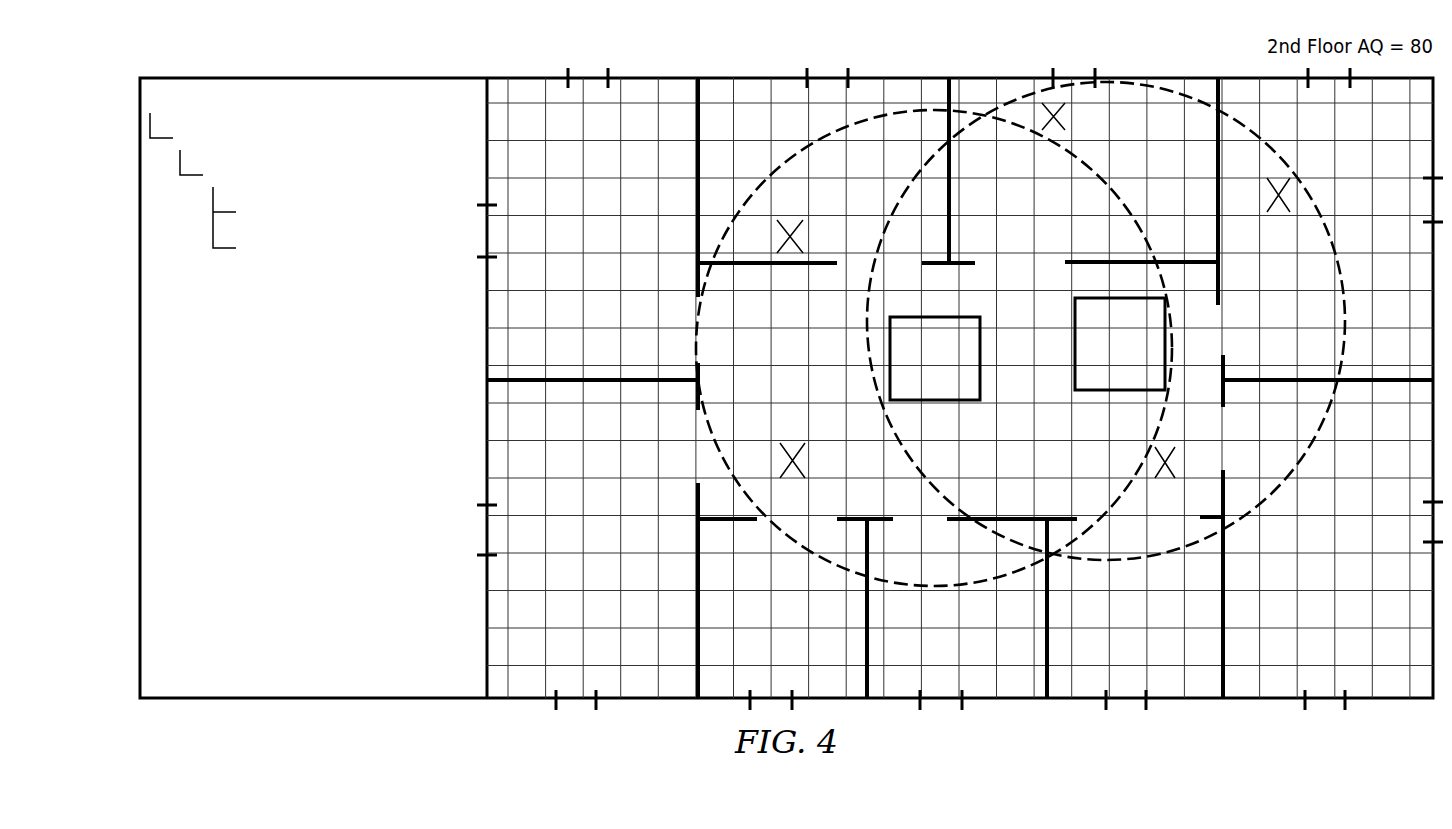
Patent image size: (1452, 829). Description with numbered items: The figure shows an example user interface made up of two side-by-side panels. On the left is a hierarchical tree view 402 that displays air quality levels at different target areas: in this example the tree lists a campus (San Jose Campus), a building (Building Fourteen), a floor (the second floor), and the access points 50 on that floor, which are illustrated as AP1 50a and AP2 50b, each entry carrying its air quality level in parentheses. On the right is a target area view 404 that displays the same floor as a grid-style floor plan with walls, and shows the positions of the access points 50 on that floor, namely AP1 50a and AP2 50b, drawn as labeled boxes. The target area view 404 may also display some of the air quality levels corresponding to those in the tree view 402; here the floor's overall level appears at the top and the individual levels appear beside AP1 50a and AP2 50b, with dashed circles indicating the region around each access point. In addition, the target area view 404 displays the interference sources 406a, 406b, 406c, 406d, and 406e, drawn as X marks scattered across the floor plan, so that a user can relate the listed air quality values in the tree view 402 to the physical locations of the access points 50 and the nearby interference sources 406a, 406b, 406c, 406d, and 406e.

The hierarchical tree view 402 is at (333, 494).
The target area view 404 is at (716, 75).
The access points 50 is at (1027, 388).
The access point AP1 50a is at (948, 400).
The access point AP2 50b is at (1120, 361).
The interference source 406a is at (805, 461).
The interference source 406b is at (800, 239).
The interference source 406c is at (1060, 123).
The interference source 406d is at (1278, 212).
The interference source 406e is at (1172, 456).